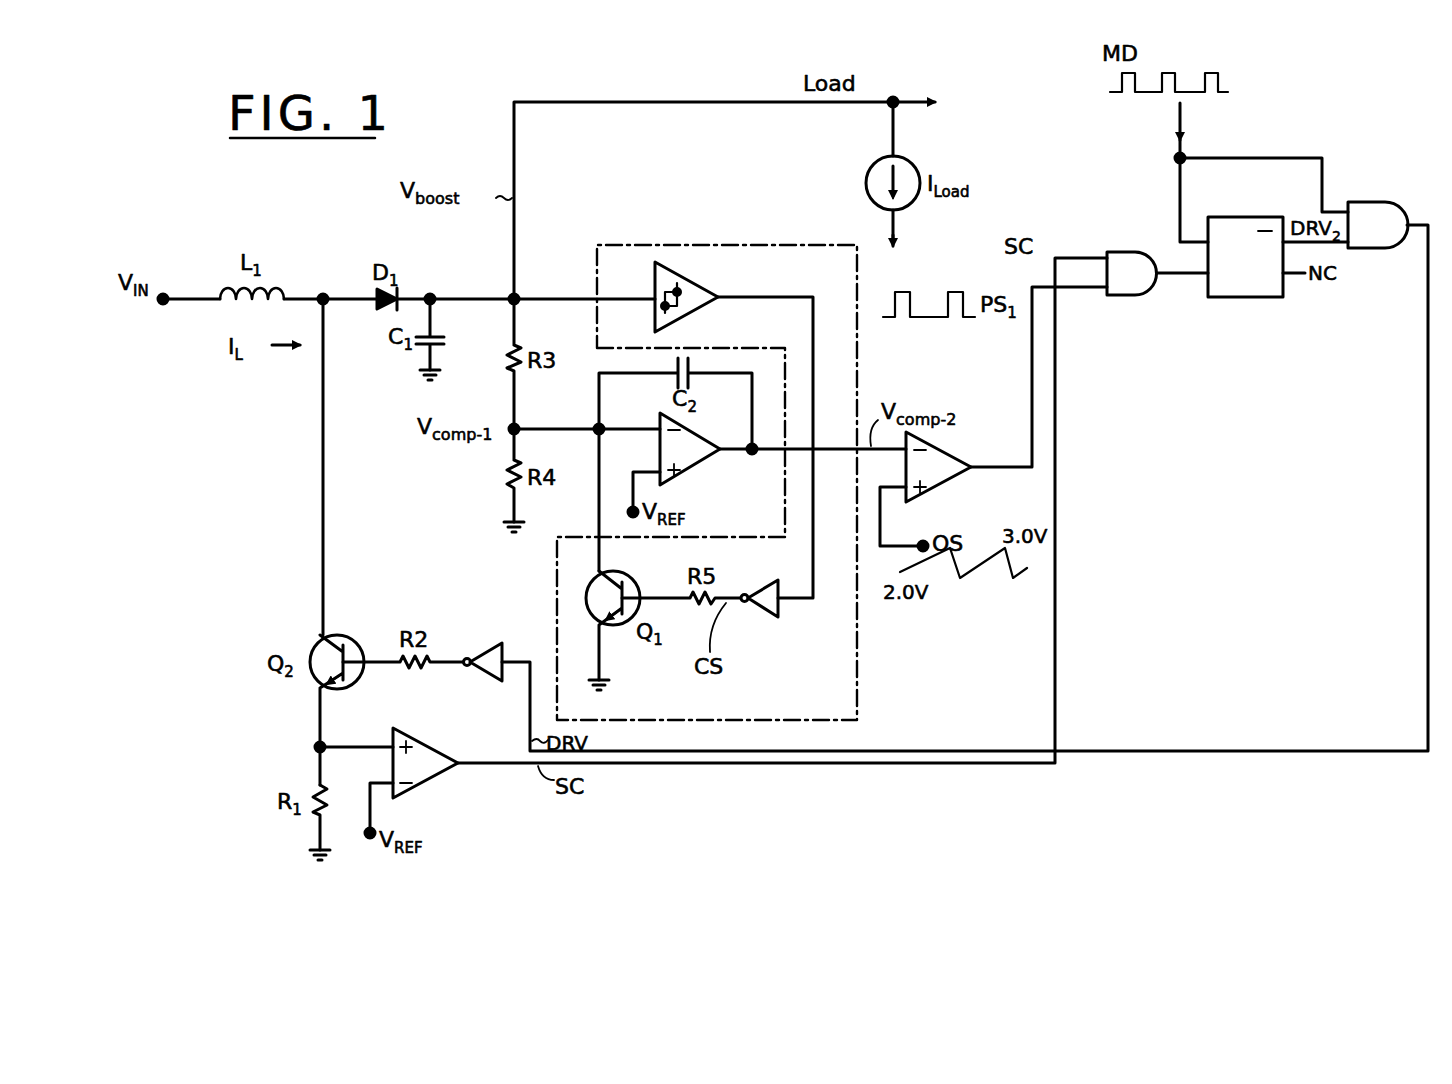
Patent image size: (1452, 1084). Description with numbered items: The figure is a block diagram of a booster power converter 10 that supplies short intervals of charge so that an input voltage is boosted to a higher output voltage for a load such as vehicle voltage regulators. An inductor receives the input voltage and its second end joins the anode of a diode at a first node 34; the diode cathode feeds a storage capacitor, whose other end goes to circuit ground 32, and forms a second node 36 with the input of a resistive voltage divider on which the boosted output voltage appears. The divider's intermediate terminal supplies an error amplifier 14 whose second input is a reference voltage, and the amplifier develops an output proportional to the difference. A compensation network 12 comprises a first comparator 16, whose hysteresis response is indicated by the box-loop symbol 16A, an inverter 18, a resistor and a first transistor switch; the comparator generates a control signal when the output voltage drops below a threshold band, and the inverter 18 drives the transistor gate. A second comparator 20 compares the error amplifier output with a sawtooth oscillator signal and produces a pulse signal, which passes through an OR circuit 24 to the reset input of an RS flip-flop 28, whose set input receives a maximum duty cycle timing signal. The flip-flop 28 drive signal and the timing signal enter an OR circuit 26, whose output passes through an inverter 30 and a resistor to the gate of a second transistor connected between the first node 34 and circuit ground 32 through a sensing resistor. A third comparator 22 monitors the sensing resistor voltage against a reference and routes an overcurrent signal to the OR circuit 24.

The booster power converter 10 is at (630, 230).
The compensation network 12 is at (757, 238).
The error amplifier 14 is at (700, 462).
The first comparator 16 is at (672, 296).
The box-loop symbol 16A is at (654, 290).
The inverter 18 is at (775, 610).
The second comparator 20 is at (945, 475).
The third comparator 22 is at (436, 718).
The OR circuit 24 is at (1120, 250).
The OR circuit 26 is at (1375, 252).
The flip-flop 28 is at (1257, 297).
The inverter 30 is at (494, 646).
The circuit ground 32 is at (424, 374).
The first node 34 is at (323, 296).
The second node 36 is at (512, 297).